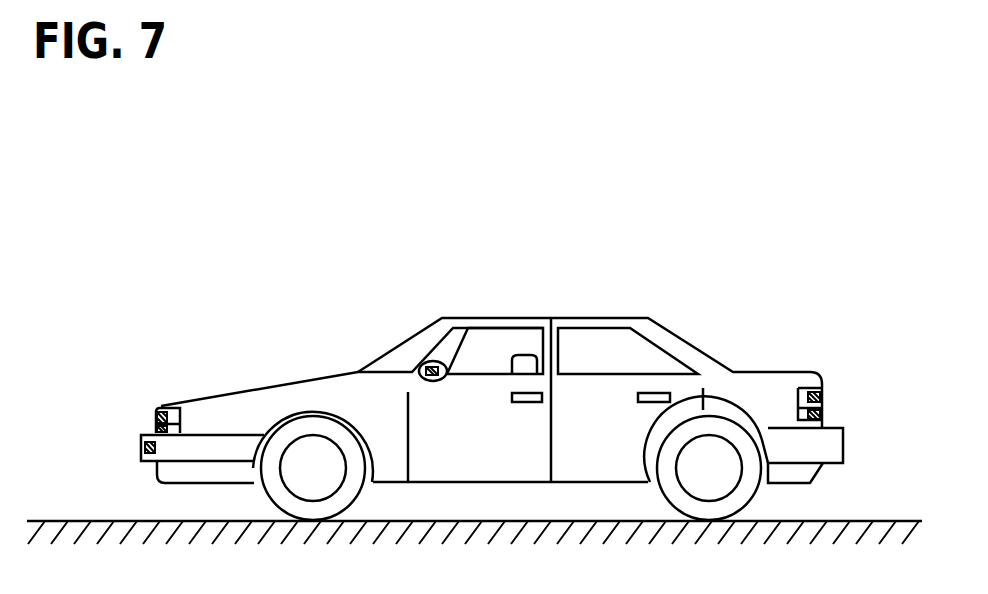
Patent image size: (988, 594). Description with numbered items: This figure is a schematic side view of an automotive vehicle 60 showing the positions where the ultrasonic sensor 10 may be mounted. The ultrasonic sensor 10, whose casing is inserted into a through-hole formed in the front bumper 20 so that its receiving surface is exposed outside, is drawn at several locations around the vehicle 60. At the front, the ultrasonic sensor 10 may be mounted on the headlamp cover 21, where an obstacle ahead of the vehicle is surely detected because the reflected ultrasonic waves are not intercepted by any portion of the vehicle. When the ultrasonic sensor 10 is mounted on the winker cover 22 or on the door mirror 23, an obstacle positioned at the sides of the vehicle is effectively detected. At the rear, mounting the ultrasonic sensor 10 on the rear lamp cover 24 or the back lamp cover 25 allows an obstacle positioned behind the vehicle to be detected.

The vehicle 60 is at (565, 297).
The ultrasonic sensor 10 is at (157, 429).
The headlamp cover 21 is at (160, 407).
The front bumper 20 is at (216, 452).
The winker cover 22 is at (168, 462).
The door mirror 23 is at (433, 359).
The rear lamp cover 24 is at (810, 372).
The back lamp cover 25 is at (843, 434).